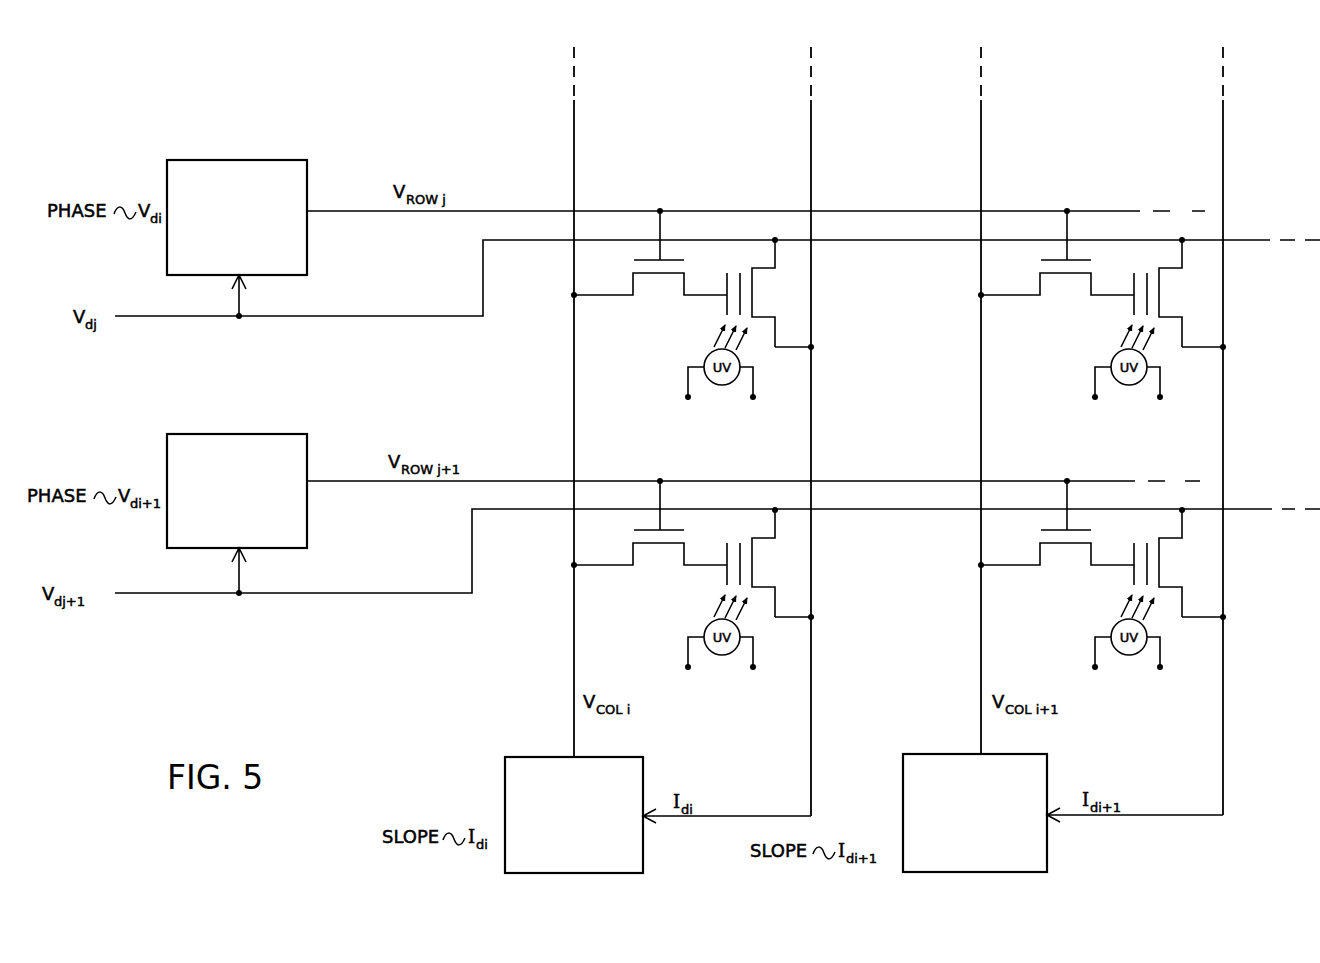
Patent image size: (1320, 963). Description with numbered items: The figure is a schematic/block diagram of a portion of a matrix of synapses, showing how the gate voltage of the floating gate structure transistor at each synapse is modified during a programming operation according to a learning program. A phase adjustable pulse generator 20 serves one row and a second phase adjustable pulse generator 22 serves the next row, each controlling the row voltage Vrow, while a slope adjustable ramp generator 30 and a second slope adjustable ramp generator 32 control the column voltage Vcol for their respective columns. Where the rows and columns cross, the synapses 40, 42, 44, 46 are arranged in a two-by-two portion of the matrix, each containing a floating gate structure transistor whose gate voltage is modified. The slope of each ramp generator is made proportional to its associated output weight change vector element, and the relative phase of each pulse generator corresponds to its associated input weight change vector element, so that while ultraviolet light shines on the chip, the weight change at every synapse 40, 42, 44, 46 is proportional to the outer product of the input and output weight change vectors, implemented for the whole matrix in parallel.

The phase adjustable pulse generator (row j) 20 is at (237, 217).
The phase adjustable pulse generator (row j+1) 22 is at (237, 491).
The slope adjustable ramp generator (column i) 30 is at (574, 815).
The slope adjustable ramp generator (column i+1) 32 is at (975, 813).
The pixel cell (row j, column i) with UV sensor 40 is at (674, 304).
The pixel cell (row j+1, column i) 42 is at (674, 574).
The pixel cell (row j, column i+1) 44 is at (1081, 304).
The pixel cell (row j+1, column i+1) 46 is at (1081, 574).